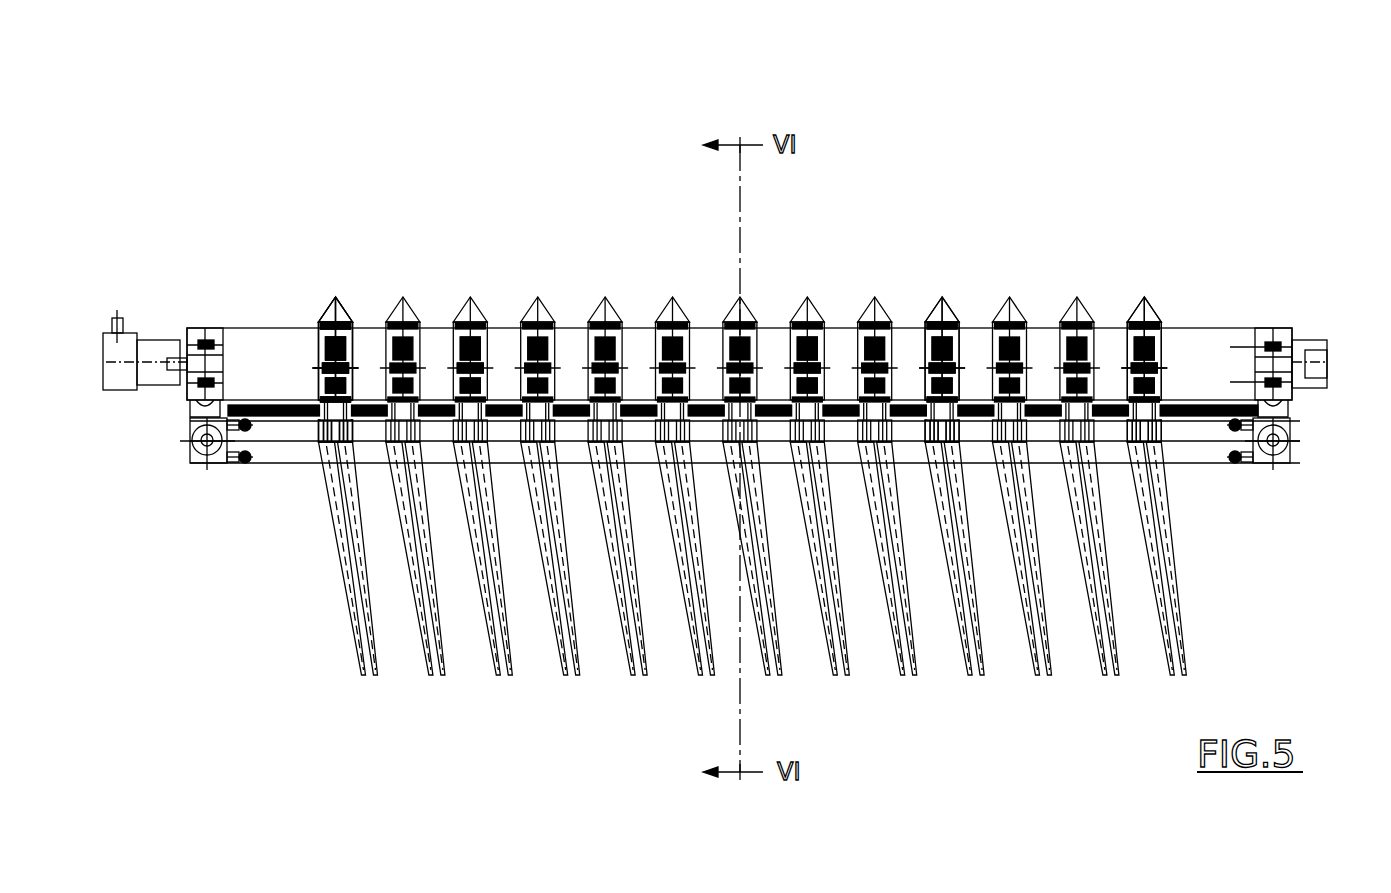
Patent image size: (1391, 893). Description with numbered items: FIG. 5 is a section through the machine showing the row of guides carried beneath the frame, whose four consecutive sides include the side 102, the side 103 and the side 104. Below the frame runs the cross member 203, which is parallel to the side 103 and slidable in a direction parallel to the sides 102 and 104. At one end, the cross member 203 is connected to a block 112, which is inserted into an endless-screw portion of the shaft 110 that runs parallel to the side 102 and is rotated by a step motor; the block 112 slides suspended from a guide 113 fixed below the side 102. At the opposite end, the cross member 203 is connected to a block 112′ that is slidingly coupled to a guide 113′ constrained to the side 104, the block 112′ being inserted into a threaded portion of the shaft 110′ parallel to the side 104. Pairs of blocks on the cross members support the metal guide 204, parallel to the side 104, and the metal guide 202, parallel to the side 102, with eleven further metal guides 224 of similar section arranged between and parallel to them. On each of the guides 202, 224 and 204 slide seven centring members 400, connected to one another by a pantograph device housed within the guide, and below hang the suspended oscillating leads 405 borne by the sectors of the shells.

The side 102 is at (1285, 330).
The side 103 is at (256, 328).
The side 104 is at (192, 328).
The shaft 110 is at (1288, 470).
The shaft 110′ is at (187, 457).
The block 112 is at (1258, 470).
The block 112′ is at (178, 427).
The guide 113 is at (1313, 345).
The guide 113′ is at (180, 390).
The metal guide 202 is at (1153, 350).
The cross member 203 is at (280, 467).
The metal guide 204 is at (310, 328).
The metal guide 224 is at (477, 350).
The centring member 400 is at (340, 318).
The oscillating lead 405 is at (425, 620).